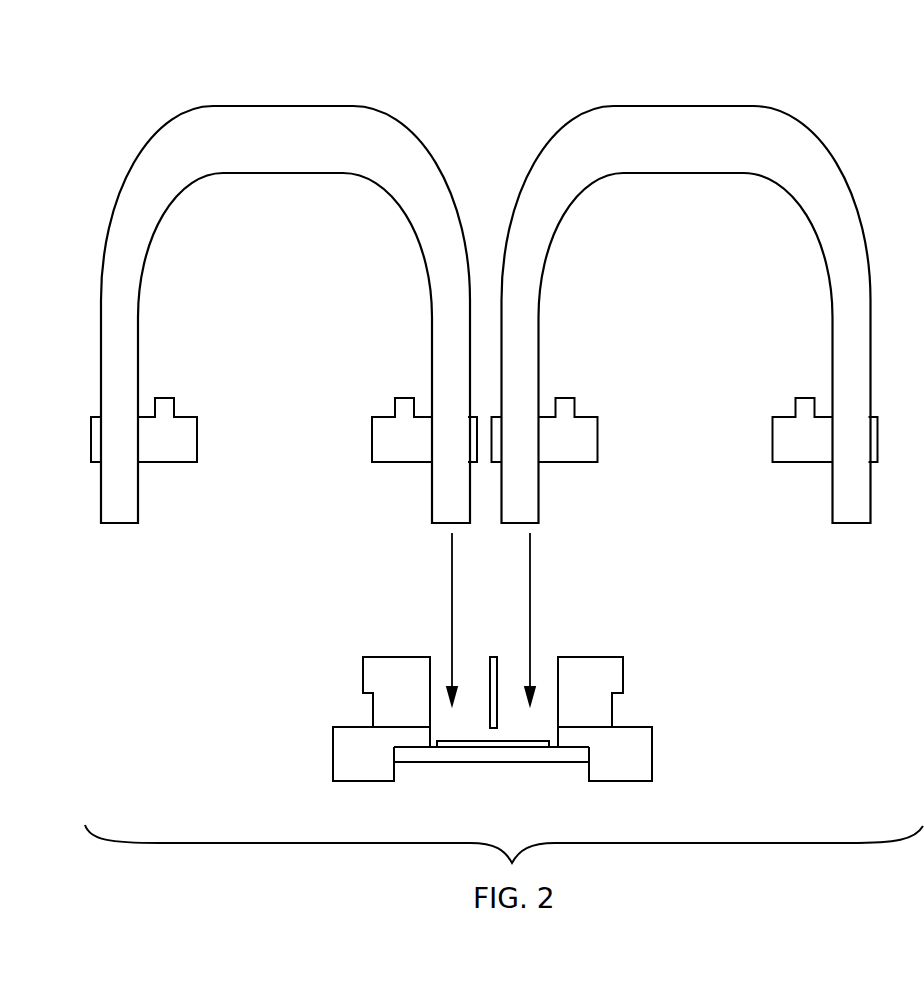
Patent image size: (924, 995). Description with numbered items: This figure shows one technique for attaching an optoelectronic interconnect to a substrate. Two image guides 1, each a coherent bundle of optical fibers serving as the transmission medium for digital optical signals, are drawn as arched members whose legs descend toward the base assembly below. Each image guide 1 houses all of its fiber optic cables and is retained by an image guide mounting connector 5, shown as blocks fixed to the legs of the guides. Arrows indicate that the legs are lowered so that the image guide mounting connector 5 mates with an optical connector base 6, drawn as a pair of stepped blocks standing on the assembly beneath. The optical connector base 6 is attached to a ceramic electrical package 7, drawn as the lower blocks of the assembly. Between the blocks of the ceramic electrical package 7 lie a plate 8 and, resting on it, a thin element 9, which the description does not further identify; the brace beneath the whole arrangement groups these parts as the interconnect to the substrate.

The image guide 1 is at (290, 106).
The image guide mounting connector 5 is at (593, 417).
The optical connector base 6 is at (623, 667).
The ceramic electrical package 7 is at (652, 758).
The base plate 8 is at (493, 762).
The thin sample plate 9 is at (442, 747).